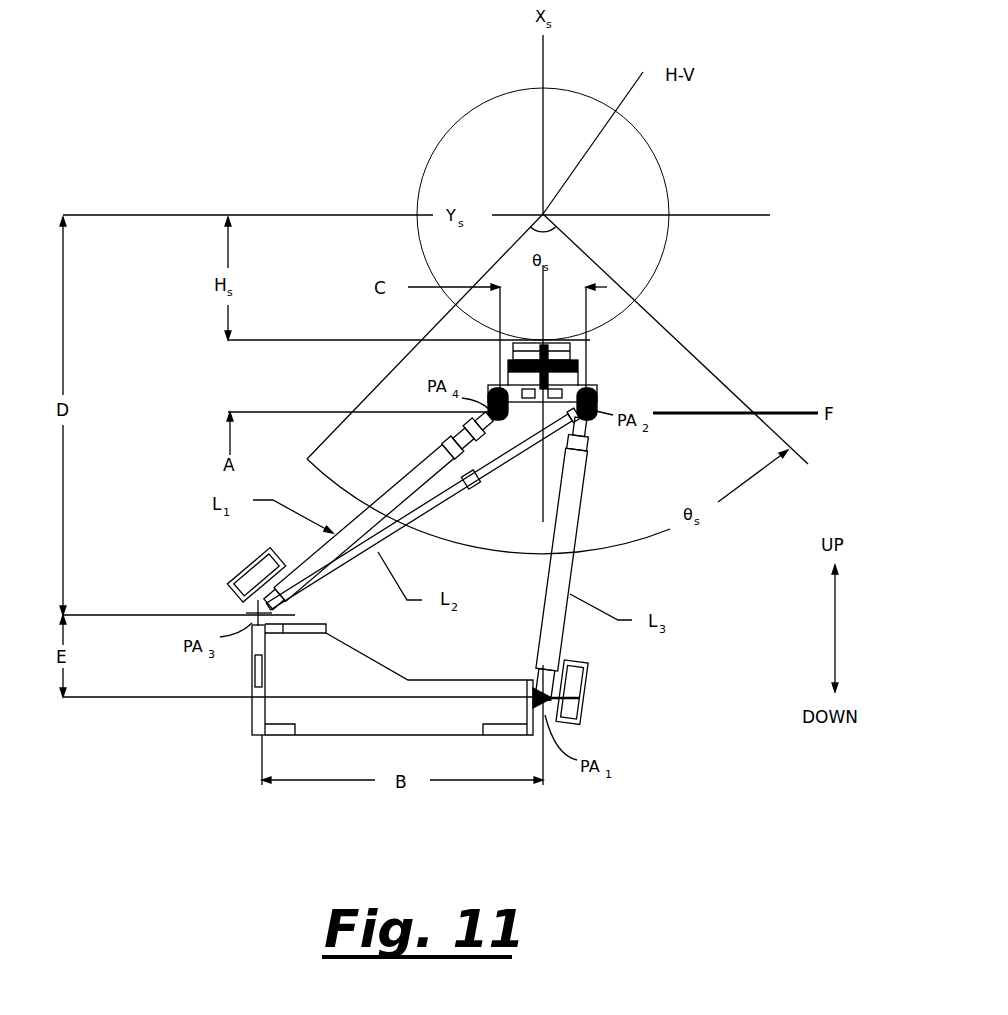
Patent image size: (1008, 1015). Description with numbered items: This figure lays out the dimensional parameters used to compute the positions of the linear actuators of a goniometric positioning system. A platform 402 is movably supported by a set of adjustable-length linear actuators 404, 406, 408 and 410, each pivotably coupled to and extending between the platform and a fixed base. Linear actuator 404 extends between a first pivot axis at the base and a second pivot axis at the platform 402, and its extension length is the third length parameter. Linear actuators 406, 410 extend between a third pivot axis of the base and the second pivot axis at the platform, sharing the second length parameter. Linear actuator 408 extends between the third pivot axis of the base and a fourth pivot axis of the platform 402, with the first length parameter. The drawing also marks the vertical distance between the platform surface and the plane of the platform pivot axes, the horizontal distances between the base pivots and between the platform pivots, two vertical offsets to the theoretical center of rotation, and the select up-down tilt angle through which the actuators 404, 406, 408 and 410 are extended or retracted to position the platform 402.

The platform 402 is at (568, 342).
The linear actuator 404 is at (583, 487).
The linear actuator 406 is at (404, 540).
The linear actuator 408 is at (430, 467).
The linear actuator 410 is at (481, 526).